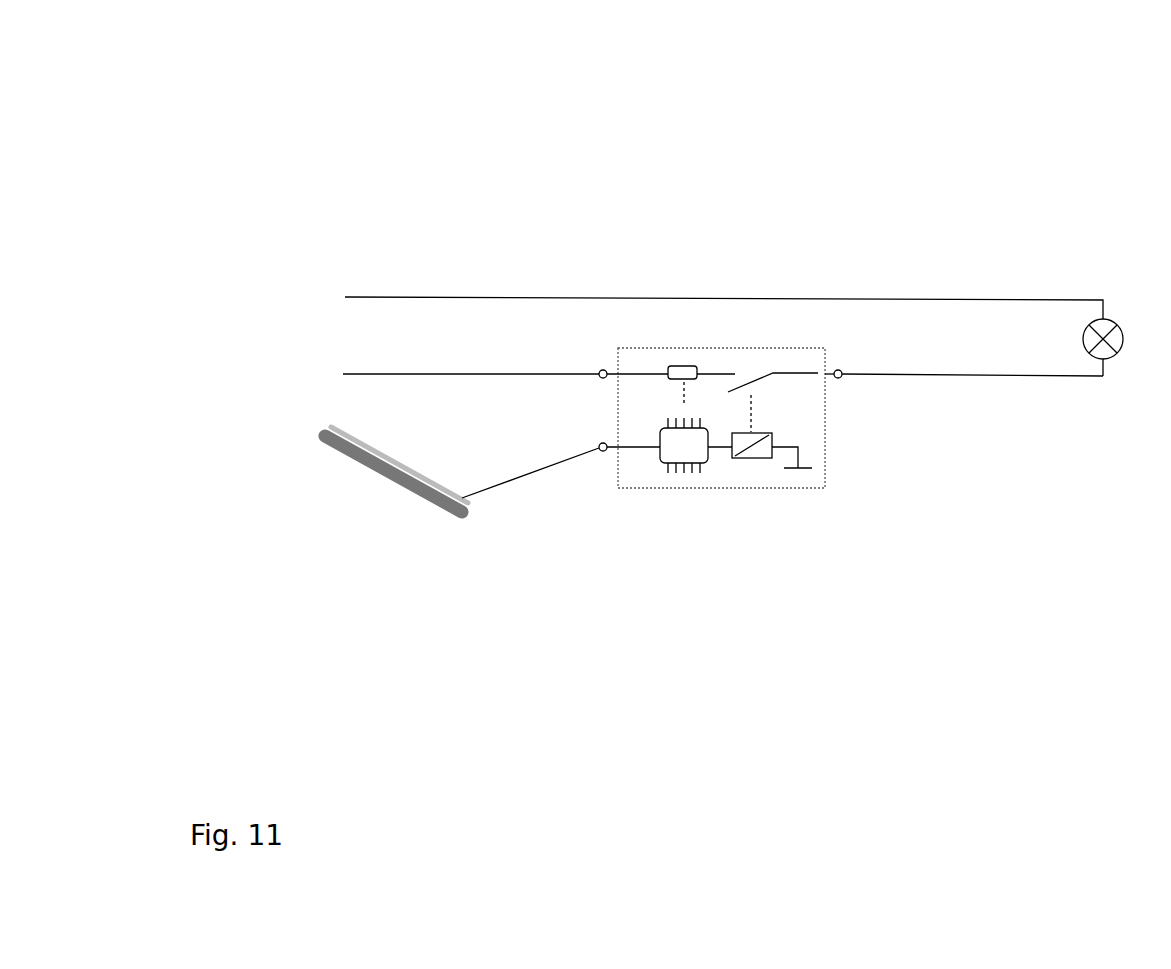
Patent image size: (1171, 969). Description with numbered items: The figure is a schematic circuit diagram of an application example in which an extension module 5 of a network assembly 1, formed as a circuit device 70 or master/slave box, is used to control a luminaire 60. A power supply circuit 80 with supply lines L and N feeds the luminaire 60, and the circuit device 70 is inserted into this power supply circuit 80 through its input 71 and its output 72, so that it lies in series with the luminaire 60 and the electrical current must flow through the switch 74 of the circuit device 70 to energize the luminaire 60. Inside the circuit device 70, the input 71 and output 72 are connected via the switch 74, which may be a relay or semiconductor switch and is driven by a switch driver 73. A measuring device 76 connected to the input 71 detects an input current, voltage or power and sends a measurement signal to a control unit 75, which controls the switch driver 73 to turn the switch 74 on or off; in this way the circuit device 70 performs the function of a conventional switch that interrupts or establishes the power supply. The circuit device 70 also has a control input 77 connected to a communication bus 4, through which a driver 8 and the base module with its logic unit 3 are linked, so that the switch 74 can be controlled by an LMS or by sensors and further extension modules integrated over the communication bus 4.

The network assembly 1 is at (290, 75).
The logic unit 3 is at (432, 500).
The communication bus 4 is at (506, 492).
The extension module 5 is at (550, 609).
The driver 8 is at (340, 453).
The luminaire 60 is at (1110, 355).
The circuit device 70 is at (693, 575).
The input 71 is at (601, 378).
The output 72 is at (838, 378).
The switch driver 73 is at (748, 467).
The switch 74 is at (790, 393).
The control unit 75 is at (662, 462).
The measuring device 76 is at (645, 390).
The control input 77 is at (599, 451).
The power supply circuit 80 is at (988, 395).